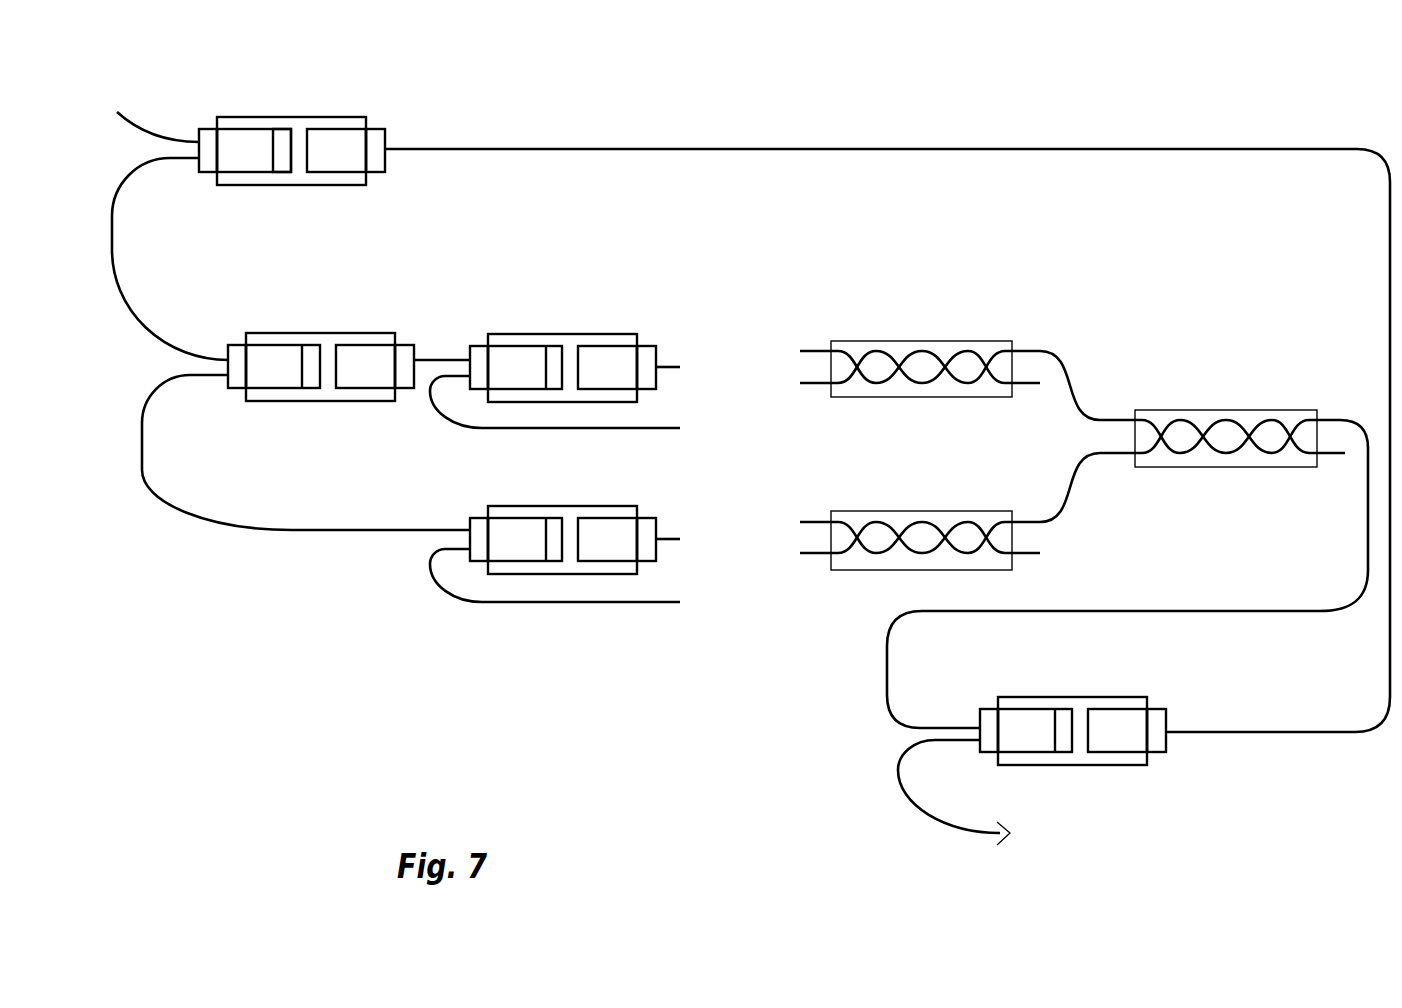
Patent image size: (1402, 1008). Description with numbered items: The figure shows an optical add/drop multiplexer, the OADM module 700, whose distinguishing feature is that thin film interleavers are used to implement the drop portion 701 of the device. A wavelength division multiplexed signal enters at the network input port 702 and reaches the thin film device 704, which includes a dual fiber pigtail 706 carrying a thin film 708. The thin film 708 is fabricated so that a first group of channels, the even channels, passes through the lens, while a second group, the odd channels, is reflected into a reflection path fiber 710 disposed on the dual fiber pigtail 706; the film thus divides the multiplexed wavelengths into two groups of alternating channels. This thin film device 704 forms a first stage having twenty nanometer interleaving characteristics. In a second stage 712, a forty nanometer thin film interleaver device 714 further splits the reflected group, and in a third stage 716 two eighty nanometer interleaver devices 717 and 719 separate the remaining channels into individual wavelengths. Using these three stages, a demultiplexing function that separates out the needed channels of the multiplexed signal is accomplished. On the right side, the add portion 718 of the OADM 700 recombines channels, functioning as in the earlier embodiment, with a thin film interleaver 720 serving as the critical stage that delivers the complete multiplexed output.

The OADM module 700 is at (1035, 112).
The drop portion 701 is at (431, 523).
The network input port 702 is at (177, 140).
The thin film device 704 is at (296, 125).
The dual fiber pigtail 706 is at (238, 129).
The thin film 708 is at (287, 146).
The reflection path fiber 710 is at (117, 278).
The second stage 712 is at (349, 360).
The thin film interleaver device 714 is at (313, 402).
The third stage 716 is at (575, 359).
The interleaver device 717 is at (475, 308).
The add portion 718 is at (1071, 622).
The interleaver device 719 is at (568, 539).
The thin film interleaver 720 is at (1063, 697).